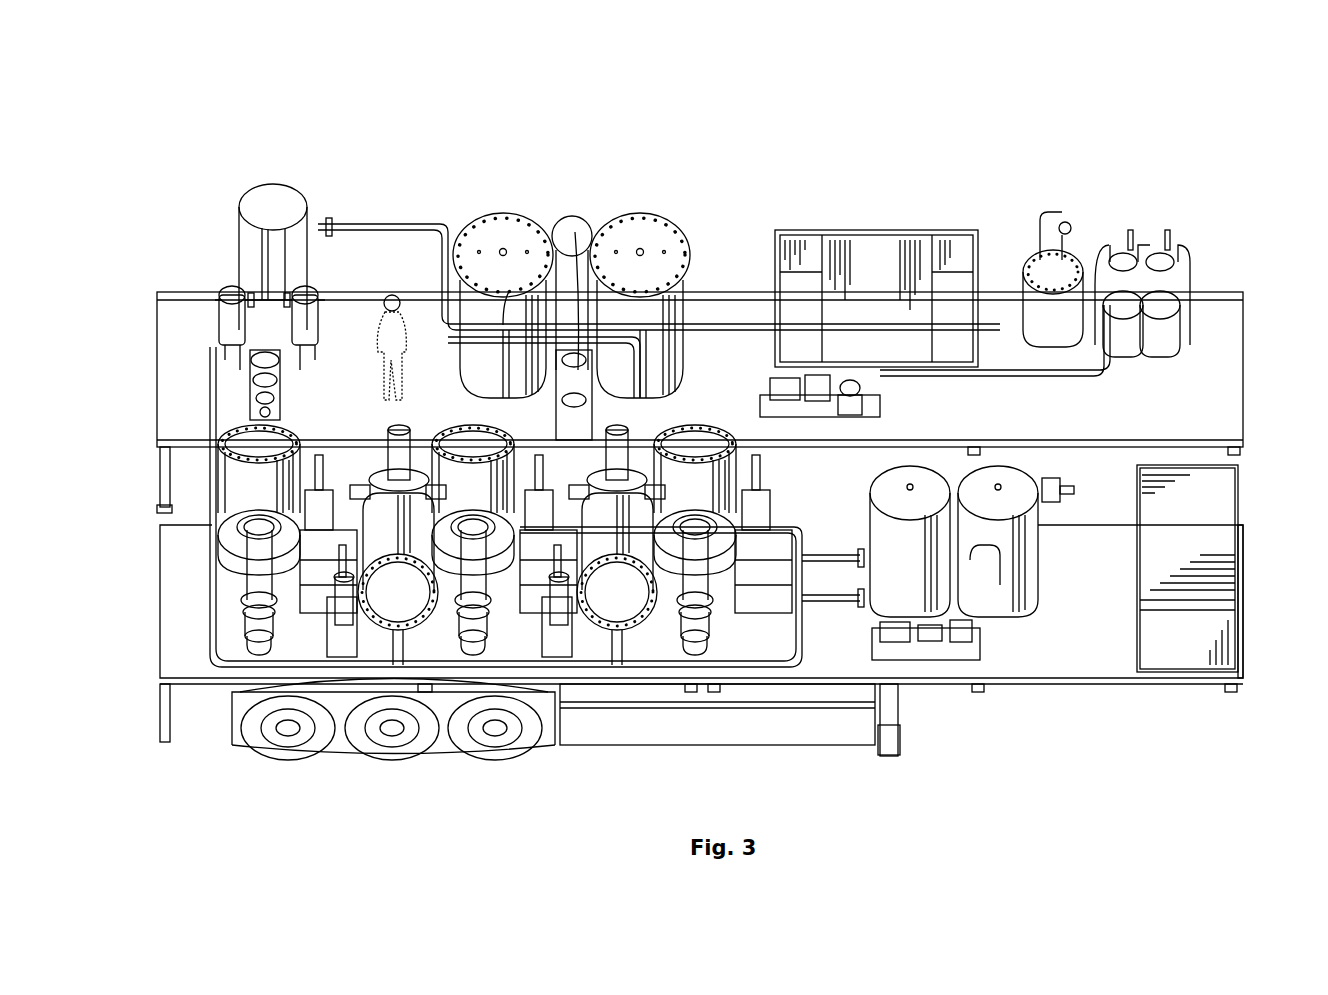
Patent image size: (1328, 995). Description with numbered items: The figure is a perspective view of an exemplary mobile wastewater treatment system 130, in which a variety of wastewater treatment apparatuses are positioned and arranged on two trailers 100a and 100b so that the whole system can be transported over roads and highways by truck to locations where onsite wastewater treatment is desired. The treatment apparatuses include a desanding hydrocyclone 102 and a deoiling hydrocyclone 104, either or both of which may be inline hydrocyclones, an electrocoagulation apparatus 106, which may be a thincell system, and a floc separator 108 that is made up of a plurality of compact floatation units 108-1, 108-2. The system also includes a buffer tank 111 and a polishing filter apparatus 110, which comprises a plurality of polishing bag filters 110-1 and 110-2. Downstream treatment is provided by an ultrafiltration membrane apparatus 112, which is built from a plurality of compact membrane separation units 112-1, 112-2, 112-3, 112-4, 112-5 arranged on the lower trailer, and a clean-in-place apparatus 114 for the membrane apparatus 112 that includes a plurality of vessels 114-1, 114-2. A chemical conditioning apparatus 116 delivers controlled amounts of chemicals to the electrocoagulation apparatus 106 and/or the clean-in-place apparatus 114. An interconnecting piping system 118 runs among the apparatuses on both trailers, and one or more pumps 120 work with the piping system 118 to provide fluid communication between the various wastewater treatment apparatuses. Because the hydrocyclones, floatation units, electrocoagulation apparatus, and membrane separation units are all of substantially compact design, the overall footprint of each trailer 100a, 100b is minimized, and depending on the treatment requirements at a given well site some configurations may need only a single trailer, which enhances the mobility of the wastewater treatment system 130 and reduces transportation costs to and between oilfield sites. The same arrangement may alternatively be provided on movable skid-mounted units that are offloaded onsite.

The trailer 100a is at (160, 398).
The trailer 100b is at (153, 647).
The desanding hydrocyclone 102 is at (1165, 305).
The deoiling hydrocyclone 104 is at (1045, 250).
The electrocoagulation apparatus 106 is at (880, 230).
The floc separator 108 is at (571, 258).
The compact floatation unit 108-1 is at (640, 235).
The compact floatation unit 108-2 is at (505, 228).
The polishing filter apparatus 110 is at (198, 239).
The polishing filter 110-1 is at (283, 238).
The polishing filter 110-2 is at (233, 288).
The buffer tank 111 is at (273, 190).
The ultrafiltration membrane apparatus 112 is at (436, 514).
The membrane separation unit 112-1 is at (255, 478).
The membrane separation unit 112-2 is at (398, 520).
The membrane separation unit 112-3 is at (475, 480).
The membrane separation unit 112-4 is at (640, 565).
The membrane separation unit 112-5 is at (695, 470).
The clean-in-place apparatus 114 is at (1083, 512).
The vessel 114-1 is at (912, 470).
The vessel 114-2 is at (998, 470).
The chemical conditioning apparatus 116 is at (1225, 540).
The interconnecting piping system 118 is at (355, 222).
The pump 120 is at (262, 378).
The mobile wastewater treatment system 130 is at (1135, 185).